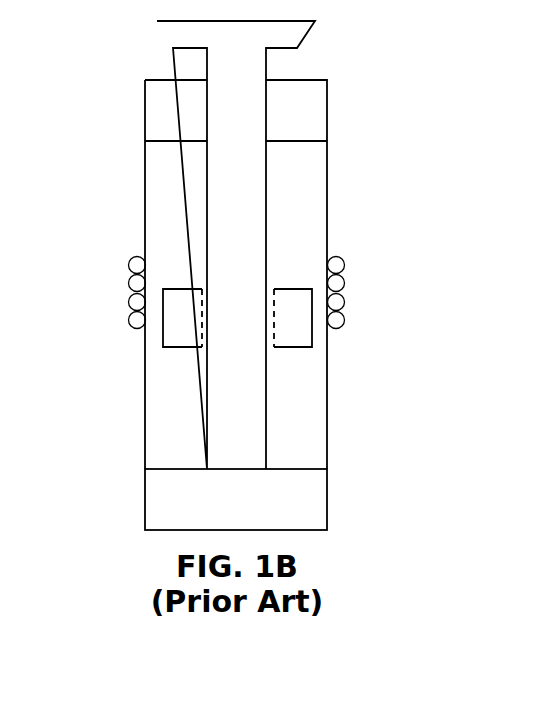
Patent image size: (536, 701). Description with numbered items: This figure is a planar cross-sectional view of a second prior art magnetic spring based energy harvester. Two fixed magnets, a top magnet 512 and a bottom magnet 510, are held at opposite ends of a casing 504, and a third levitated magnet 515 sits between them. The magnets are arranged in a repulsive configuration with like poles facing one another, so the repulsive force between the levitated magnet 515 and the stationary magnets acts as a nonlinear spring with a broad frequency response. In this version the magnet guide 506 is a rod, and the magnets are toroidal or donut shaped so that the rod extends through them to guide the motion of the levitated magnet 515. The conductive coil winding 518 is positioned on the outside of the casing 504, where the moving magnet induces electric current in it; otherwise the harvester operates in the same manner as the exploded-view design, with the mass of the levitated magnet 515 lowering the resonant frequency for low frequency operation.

The casing 504 is at (328, 409).
The magnet guide 506 is at (265, 203).
The bottom magnet 510 is at (145, 497).
The top magnet 512 is at (328, 103).
The levitated magnet 515 is at (163, 333).
The conductive coil winding 518 is at (343, 302).